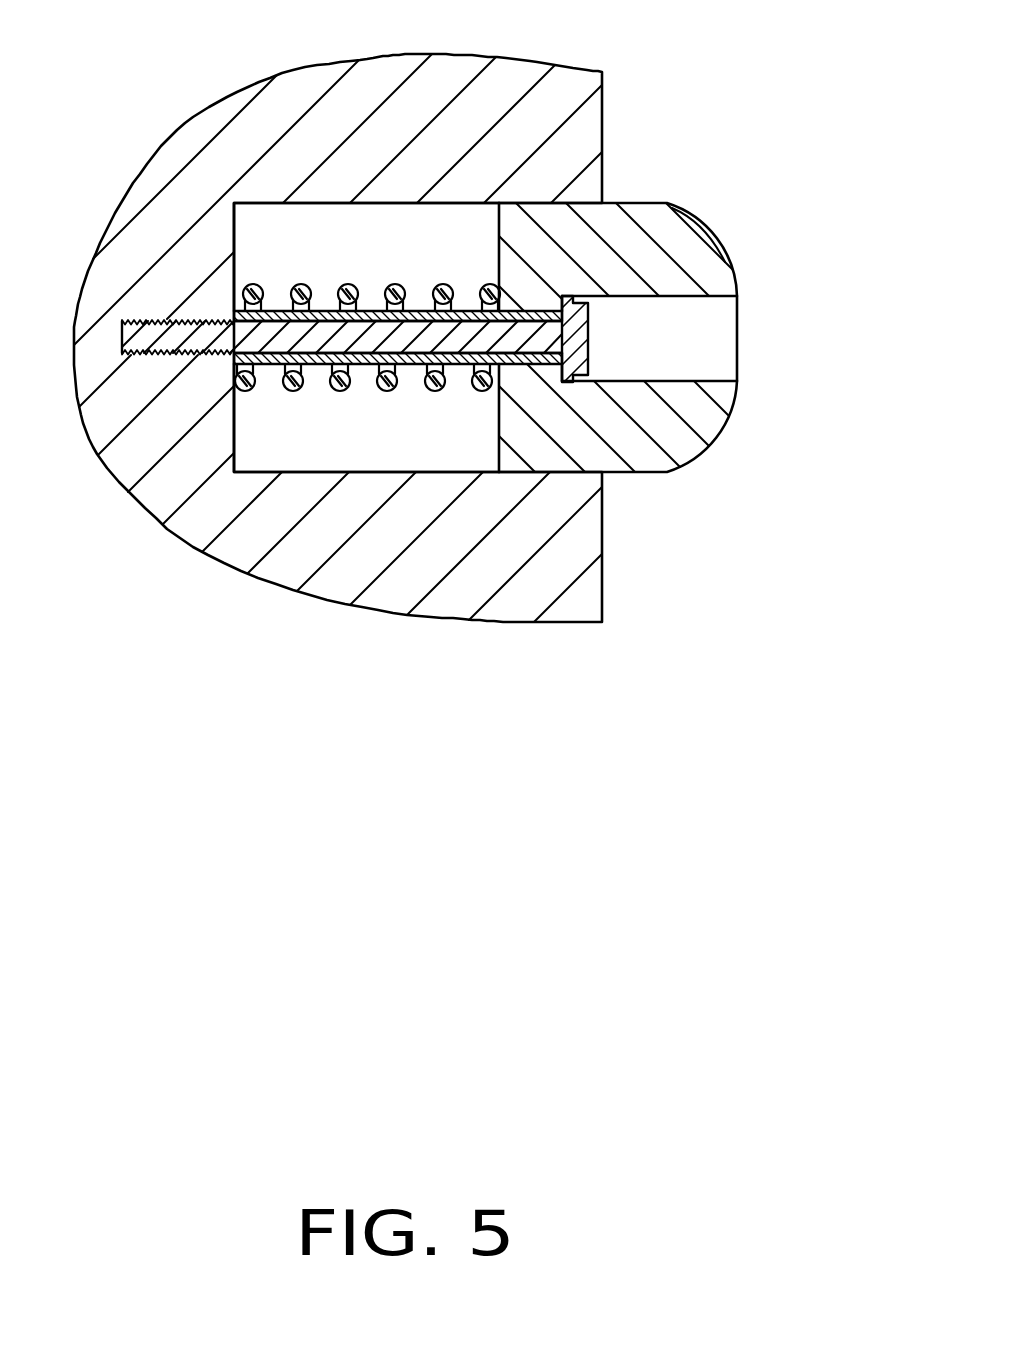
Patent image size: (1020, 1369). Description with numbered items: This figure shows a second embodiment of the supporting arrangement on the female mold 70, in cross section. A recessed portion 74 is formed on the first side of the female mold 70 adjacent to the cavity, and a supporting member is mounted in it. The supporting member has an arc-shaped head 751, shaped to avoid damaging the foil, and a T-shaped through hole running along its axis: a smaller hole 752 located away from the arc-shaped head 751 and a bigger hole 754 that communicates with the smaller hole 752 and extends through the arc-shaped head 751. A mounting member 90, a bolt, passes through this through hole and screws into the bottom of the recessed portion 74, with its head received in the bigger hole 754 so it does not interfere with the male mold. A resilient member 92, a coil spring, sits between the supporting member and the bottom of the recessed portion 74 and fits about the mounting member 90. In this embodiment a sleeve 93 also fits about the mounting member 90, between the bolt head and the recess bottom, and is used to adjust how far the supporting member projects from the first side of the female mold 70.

The female mold 70 is at (545, 102).
The recessed portion 74 is at (257, 260).
The arc-shaped head 751 is at (723, 258).
The smaller hole 752 is at (548, 296).
The bigger hole 754 is at (687, 335).
The mounting member 90 is at (430, 333).
The resilient member 92 is at (347, 283).
The sleeve 93 is at (277, 358).